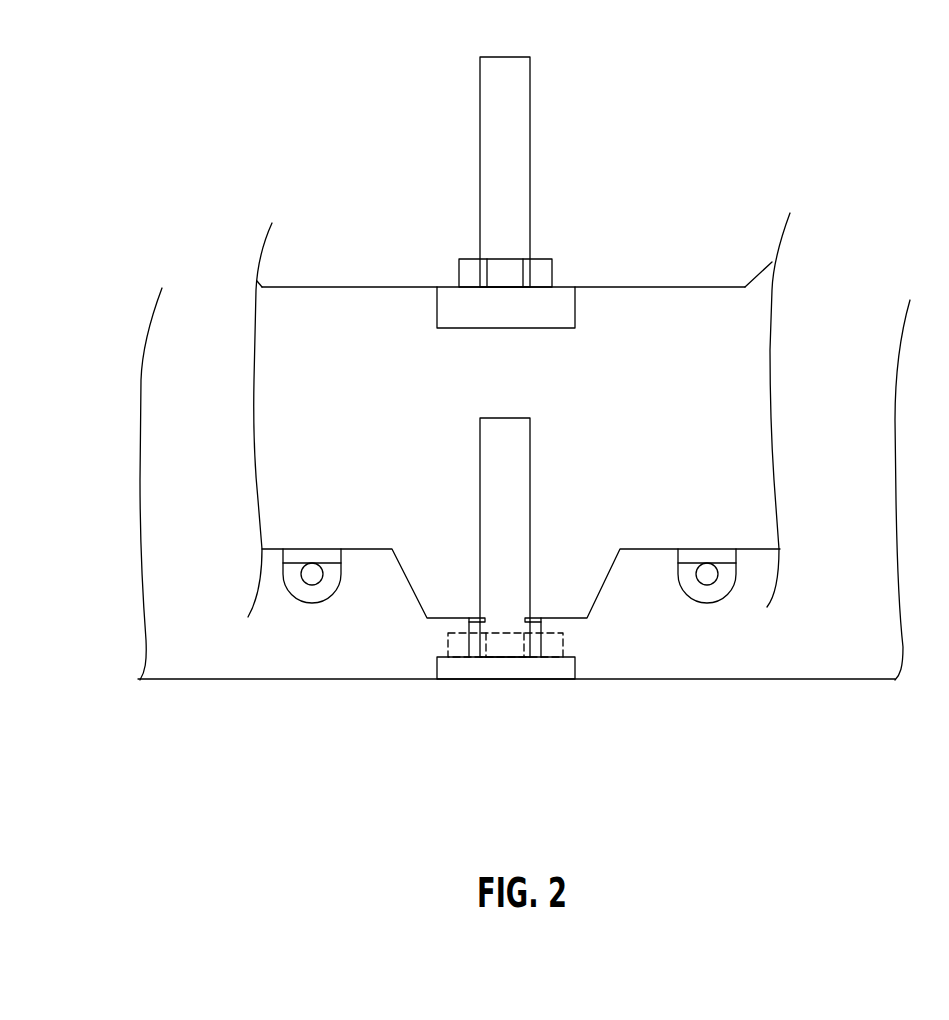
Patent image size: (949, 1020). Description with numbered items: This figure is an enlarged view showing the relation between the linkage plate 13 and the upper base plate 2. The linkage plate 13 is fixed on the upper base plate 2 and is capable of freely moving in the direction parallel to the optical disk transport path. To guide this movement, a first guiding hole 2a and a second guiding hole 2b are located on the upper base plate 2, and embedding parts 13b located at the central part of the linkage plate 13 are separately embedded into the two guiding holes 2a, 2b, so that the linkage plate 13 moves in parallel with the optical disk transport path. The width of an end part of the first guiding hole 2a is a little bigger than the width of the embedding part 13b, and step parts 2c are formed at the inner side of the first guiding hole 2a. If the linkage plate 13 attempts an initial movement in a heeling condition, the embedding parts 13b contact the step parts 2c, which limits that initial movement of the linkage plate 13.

The upper base plate 2 is at (208, 645).
The first guiding hole 2a is at (507, 470).
The second guiding hole 2b is at (518, 228).
The step parts 2c is at (470, 657).
The linkage plate 13 is at (342, 498).
The embedding parts 13b is at (502, 273).